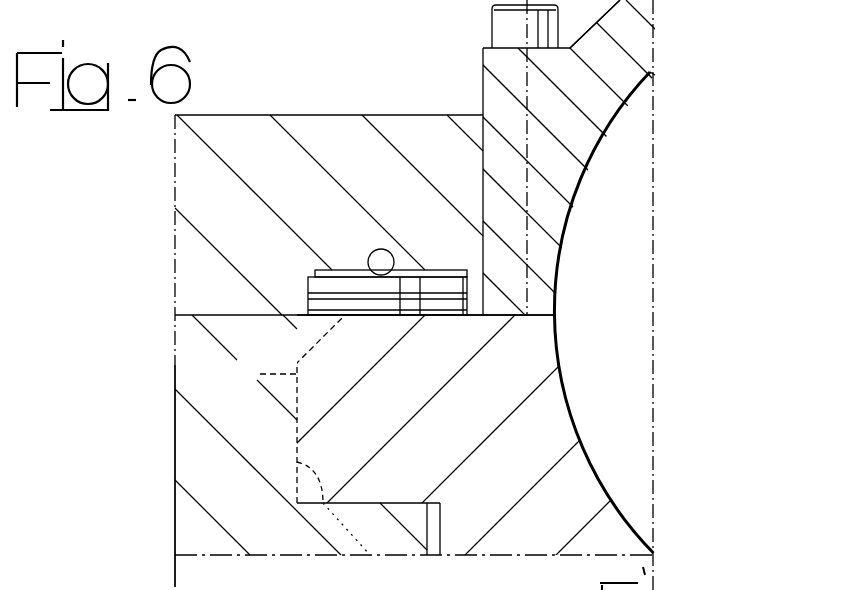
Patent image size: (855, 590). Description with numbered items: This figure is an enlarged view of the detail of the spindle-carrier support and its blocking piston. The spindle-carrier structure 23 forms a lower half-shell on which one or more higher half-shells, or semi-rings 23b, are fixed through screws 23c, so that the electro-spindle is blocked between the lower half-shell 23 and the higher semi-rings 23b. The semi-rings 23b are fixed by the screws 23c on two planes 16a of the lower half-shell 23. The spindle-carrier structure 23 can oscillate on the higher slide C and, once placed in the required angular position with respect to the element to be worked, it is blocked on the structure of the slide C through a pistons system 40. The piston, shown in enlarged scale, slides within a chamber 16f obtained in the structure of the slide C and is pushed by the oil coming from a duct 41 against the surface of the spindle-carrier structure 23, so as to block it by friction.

The spindle-carrier structure 23 is at (577, 458).
The half-shell 23b is at (643, 48).
The screws 23c is at (502, 27).
The pistons system 40 is at (485, 282).
The duct 41 is at (384, 260).
The planes 16a is at (520, 315).
The chamber 16f is at (310, 266).
The higher slide C is at (198, 452).